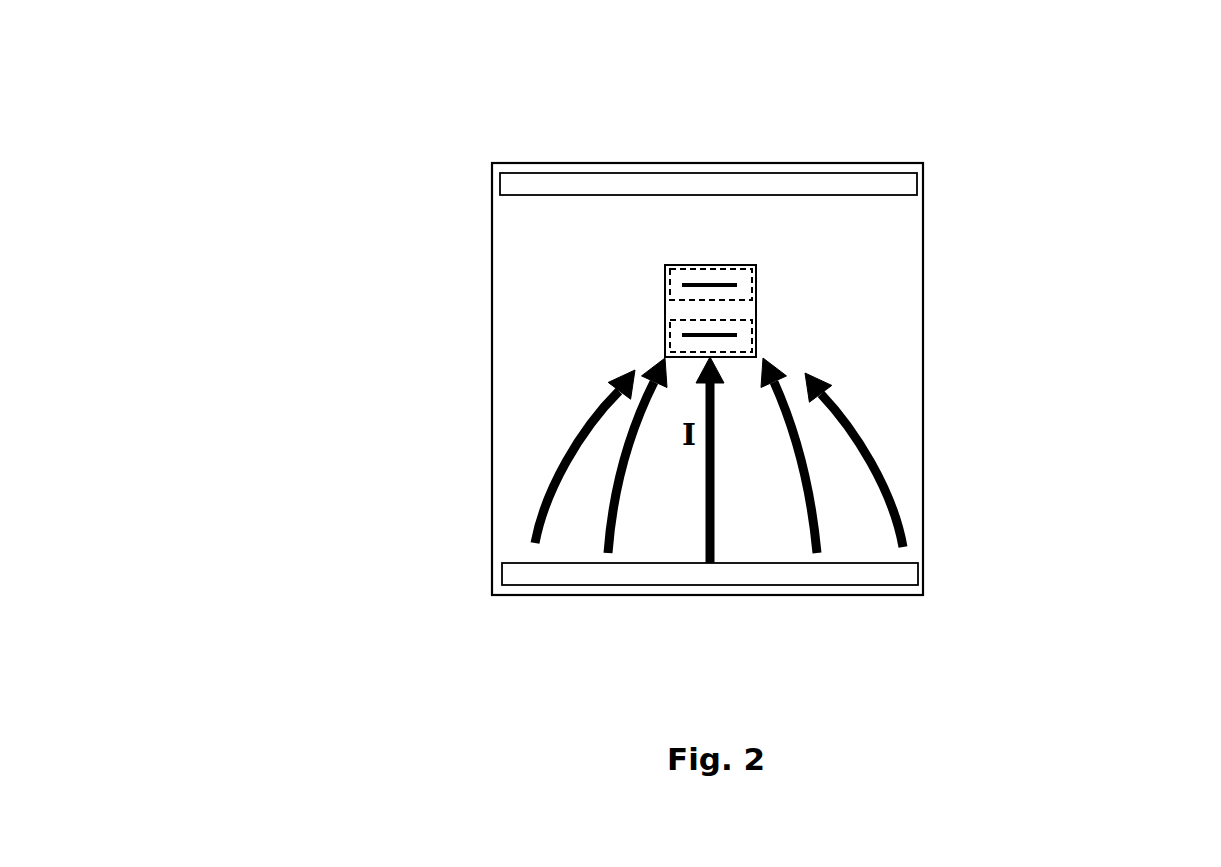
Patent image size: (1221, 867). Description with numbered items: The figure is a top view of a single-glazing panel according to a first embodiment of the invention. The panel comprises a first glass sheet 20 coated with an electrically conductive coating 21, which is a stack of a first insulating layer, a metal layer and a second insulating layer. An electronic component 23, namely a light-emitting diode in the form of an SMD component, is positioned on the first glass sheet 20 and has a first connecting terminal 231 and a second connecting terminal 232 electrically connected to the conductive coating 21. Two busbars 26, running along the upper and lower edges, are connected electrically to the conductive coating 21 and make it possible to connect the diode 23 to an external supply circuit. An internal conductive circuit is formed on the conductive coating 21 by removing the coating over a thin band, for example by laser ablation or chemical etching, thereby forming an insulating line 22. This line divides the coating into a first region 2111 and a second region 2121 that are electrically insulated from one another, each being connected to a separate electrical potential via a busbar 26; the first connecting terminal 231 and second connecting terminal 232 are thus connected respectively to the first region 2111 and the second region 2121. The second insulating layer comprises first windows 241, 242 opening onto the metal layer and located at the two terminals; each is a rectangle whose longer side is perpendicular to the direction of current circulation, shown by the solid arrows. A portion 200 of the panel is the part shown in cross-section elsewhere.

The first glass sheet 20 is at (492, 280).
The electrically conductive coating 21 is at (510, 530).
The insulating line 22 is at (825, 310).
The electronic component 23 is at (672, 265).
The busbars 26 is at (505, 180).
The portion of the panel 200 is at (448, 445).
The first connecting terminal 231 is at (752, 285).
The second connecting terminal 232 is at (750, 337).
The first window 241 is at (725, 283).
The first window 242 is at (730, 338).
The first region 2111 is at (900, 248).
The second region 2121 is at (893, 371).